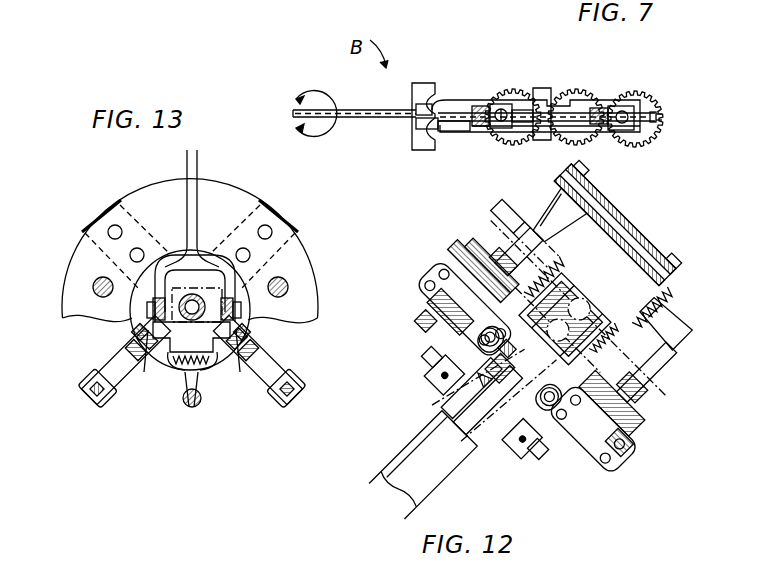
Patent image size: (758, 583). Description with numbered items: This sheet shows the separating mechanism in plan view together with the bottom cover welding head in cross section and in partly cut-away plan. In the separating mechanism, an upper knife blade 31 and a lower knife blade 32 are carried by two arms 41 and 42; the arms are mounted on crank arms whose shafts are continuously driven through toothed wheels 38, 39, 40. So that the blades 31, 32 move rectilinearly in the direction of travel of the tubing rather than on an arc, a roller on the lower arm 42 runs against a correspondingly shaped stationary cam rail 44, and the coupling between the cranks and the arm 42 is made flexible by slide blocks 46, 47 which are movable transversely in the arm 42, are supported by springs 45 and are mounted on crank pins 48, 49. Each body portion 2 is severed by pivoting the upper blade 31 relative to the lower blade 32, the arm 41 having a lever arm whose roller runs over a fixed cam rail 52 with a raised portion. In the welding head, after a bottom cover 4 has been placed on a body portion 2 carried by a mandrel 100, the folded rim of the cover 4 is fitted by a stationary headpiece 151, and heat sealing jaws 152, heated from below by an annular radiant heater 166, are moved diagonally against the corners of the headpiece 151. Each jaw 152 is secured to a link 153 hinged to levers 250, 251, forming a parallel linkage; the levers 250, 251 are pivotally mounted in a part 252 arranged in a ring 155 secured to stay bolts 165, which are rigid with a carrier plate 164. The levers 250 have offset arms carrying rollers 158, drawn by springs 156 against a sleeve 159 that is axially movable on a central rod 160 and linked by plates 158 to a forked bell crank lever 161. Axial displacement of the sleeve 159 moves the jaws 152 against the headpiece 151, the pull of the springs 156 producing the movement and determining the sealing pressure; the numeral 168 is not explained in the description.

In FIG. 12, the body portion 2 is at (457, 470).
In FIG. 12, the bottom cover 4 is at (493, 393).
In FIG. 7, the upper knife blade 31 is at (372, 119).
In FIG. 7, the lower knife blade 32 is at (358, 108).
In FIG. 7, the toothed wheel 38 is at (514, 146).
In FIG. 7, the toothed wheel 39 is at (590, 144).
In FIG. 7, the toothed wheel 40 is at (653, 147).
In FIG. 7, the arm 41 is at (443, 132).
In FIG. 7, the lower arm 42 is at (456, 100).
In FIG. 7, the stationary cam rail 44 is at (421, 88).
In FIG. 7, the spring 45 is at (481, 106).
In FIG. 7, the slide block 46 is at (502, 104).
In FIG. 7, the slide block 47 is at (640, 110).
In FIG. 7, the crank pin 48 is at (497, 121).
In FIG. 7, the crank pin 49 is at (622, 106).
In FIG. 7, the fixed cam rail 52 is at (543, 90).
In FIG. 12, the mandrel 100 is at (400, 483).
In FIG. 13, the stationary headpiece 151 is at (178, 323).
In FIG. 12, the stationary headpiece 151 is at (478, 378).
In FIG. 13, the heat sealing jaw 152 is at (146, 330).
In FIG. 12, the heat sealing jaw 152 is at (443, 362).
In FIG. 13, the link 153 is at (107, 370).
In FIG. 12, the link 153 is at (443, 300).
In FIG. 12, the ring 155 is at (640, 397).
In FIG. 12, the spring 156 is at (650, 367).
In FIG. 12, the roller 158 is at (560, 368).
In FIG. 13, the sleeve 159 is at (191, 268).
In FIG. 12, the sleeve 159 is at (497, 370).
In FIG. 12, the central rod 160 is at (595, 300).
In FIG. 13, the forked bell crank lever 161 is at (198, 166).
In FIG. 12, the forked bell crank lever 161 is at (497, 213).
In FIG. 12, the carrier plate 164 is at (607, 243).
In FIG. 13, the stay bolt 165 is at (93, 285).
In FIG. 12, the stay bolt 165 is at (535, 238).
In FIG. 13, the annular radiant heater 166 is at (202, 326).
In FIG. 12, the annular radiant heater 166 is at (455, 380).
In FIG. 13, the spring retainer 168 is at (147, 304).
In FIG. 12, the spring retainer 168 is at (622, 357).
In FIG. 13, the lever 250 is at (107, 412).
In FIG. 12, the lever 250 is at (433, 272).
In FIG. 13, the lever 251 is at (131, 393).
In FIG. 12, the lever 251 is at (488, 335).
In FIG. 12, the part 252 is at (463, 247).